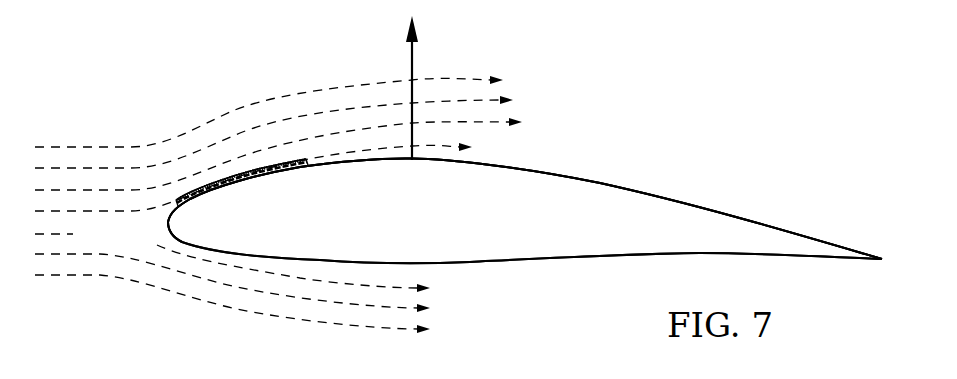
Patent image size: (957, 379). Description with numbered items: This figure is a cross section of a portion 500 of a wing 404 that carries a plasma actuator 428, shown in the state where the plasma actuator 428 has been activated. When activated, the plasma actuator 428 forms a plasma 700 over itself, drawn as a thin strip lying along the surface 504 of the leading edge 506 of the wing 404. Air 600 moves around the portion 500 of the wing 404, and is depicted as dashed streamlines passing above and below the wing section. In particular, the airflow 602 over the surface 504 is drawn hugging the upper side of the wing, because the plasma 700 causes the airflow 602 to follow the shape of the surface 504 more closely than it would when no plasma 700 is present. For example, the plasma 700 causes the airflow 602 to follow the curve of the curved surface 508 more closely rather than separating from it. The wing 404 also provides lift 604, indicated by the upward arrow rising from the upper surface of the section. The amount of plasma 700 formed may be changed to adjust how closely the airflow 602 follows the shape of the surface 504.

The wing 404 is at (777, 152).
The plasma actuator 428 is at (292, 182).
The portion of wing 500 is at (705, 148).
The surface 504 is at (583, 180).
The leading edge 506 is at (160, 224).
The curved surface 508 is at (255, 206).
The air 600 is at (155, 78).
The airflow 602 is at (333, 80).
The lift 604 is at (414, 60).
The plasma 700 is at (272, 158).